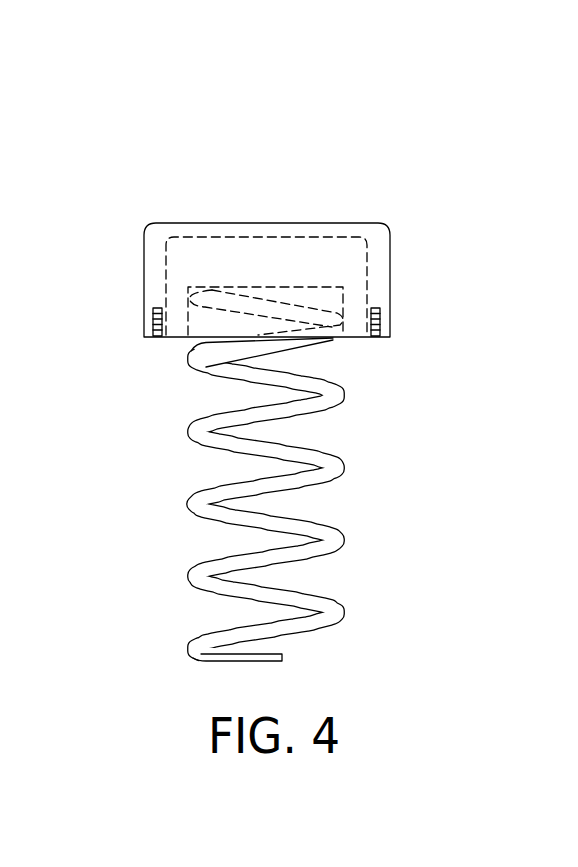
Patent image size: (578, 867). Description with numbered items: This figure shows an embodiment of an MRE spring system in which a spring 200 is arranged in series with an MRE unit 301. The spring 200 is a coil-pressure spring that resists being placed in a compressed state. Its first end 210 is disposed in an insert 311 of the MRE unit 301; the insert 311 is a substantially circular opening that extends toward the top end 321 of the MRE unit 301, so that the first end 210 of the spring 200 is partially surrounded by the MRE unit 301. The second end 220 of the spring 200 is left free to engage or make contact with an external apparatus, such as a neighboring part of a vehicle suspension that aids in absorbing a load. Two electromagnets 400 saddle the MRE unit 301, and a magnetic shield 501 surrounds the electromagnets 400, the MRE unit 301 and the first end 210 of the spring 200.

The spring 200 is at (301, 371).
The first end of the spring 210 is at (192, 371).
The second end of the spring 220 is at (312, 647).
The MRE unit 301 is at (313, 249).
The insert 311 is at (312, 353).
The top end of the MRE unit 321 is at (262, 223).
The electromagnets 400 is at (152, 311).
The magnetic shield 501 is at (391, 277).